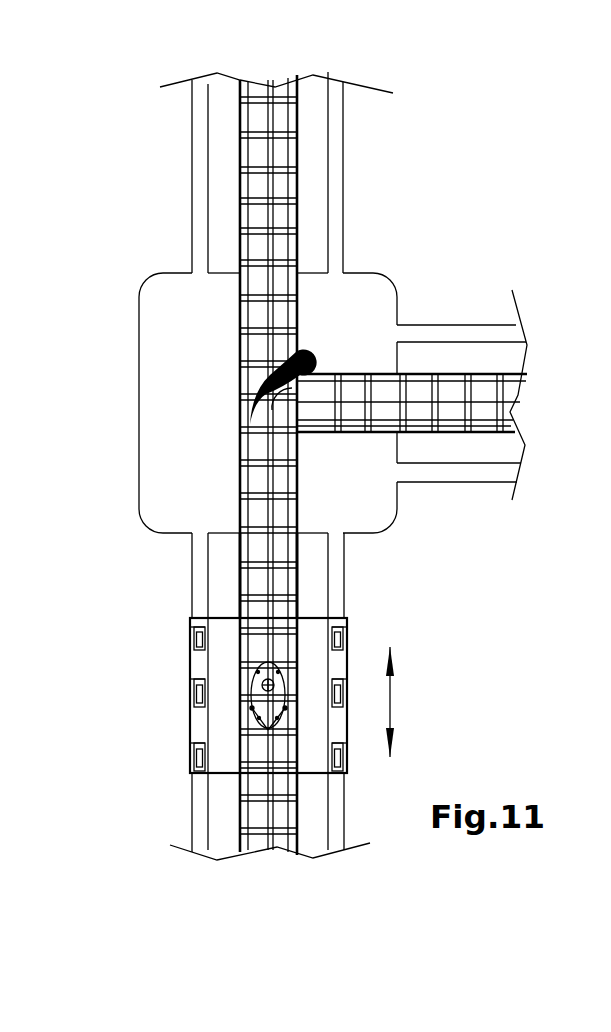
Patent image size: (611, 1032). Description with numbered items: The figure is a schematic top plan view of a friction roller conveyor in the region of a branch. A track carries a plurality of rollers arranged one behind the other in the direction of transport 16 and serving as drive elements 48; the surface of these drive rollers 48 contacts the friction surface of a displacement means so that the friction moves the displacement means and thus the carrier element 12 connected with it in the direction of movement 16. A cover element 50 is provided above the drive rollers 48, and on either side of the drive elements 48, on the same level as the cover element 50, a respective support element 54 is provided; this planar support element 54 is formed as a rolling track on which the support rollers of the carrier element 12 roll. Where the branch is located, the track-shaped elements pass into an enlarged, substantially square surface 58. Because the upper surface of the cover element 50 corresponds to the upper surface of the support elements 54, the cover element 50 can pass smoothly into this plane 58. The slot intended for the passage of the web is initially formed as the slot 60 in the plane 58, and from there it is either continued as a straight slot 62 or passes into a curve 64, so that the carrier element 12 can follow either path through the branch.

The carrier element 12 is at (223, 758).
The direction of transport 16 is at (392, 697).
The drive elements 48 is at (239, 132).
The cover element 50 is at (280, 545).
The support element 54 is at (203, 562).
The square surface 58 is at (168, 457).
The slot 60 is at (268, 488).
The straight slot 62 is at (263, 318).
The curve 64 is at (353, 393).